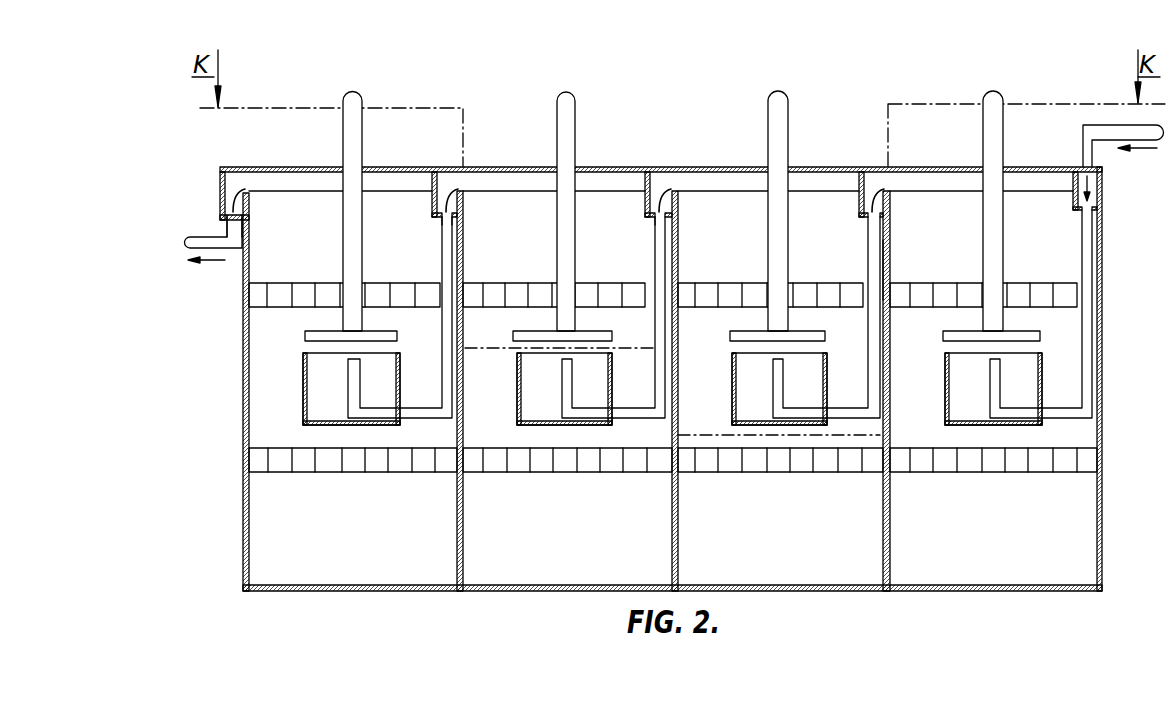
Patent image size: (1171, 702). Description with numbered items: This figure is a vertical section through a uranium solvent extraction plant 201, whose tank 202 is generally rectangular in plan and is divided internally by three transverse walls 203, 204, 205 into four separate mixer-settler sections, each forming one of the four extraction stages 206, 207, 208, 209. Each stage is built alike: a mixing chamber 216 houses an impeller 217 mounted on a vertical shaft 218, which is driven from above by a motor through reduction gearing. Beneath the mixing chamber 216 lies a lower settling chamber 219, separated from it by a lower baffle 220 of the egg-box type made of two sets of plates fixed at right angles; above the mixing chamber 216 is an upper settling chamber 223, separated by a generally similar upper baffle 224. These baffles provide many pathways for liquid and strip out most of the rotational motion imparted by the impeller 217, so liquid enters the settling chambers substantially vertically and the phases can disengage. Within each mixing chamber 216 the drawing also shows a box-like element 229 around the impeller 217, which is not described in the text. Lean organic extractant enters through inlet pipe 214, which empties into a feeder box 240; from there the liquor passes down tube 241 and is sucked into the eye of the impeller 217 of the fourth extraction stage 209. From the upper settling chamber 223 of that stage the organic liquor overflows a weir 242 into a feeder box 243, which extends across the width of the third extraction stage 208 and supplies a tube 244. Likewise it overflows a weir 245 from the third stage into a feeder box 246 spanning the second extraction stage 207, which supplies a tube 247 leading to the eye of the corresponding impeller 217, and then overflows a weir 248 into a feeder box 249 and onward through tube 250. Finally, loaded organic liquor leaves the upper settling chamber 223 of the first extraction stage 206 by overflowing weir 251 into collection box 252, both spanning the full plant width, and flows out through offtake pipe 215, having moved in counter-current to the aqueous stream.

The uranium solvent extraction plant 201 is at (238, 400).
The tank 202 is at (250, 510).
The transverse wall 203 is at (465, 510).
The transverse wall 204 is at (680, 510).
The transverse wall 205 is at (891, 510).
The first extraction stage 206 is at (372, 558).
The second extraction stage 207 is at (575, 560).
The third extraction stage 208 is at (788, 565).
The fourth extraction stage 209 is at (993, 555).
The inlet pipe 214 is at (1096, 130).
The offtake pipe 215 is at (204, 237).
The mixing chamber 216 is at (243, 356).
The impeller 217 is at (308, 335).
The vertical shaft 218 is at (353, 98).
The lower settling chamber 219 is at (306, 557).
The lower baffle 220 is at (355, 475).
The upper settling chamber 223 is at (300, 215).
The upper baffle 224 is at (403, 283).
The inner box 229 is at (303, 408).
The feeder box 240 is at (1098, 204).
The tube 241 is at (1093, 380).
The weir 242 is at (888, 167).
The feeder box 243 is at (858, 198).
The tube 244 is at (892, 270).
The weir 245 is at (677, 195).
The feeder box 246 is at (632, 167).
The tube 247 is at (628, 420).
The weir 248 is at (482, 167).
The feeder box 249 is at (440, 199).
The tube 250 is at (415, 408).
The weir 251 is at (247, 186).
The collection box 252 is at (222, 186).